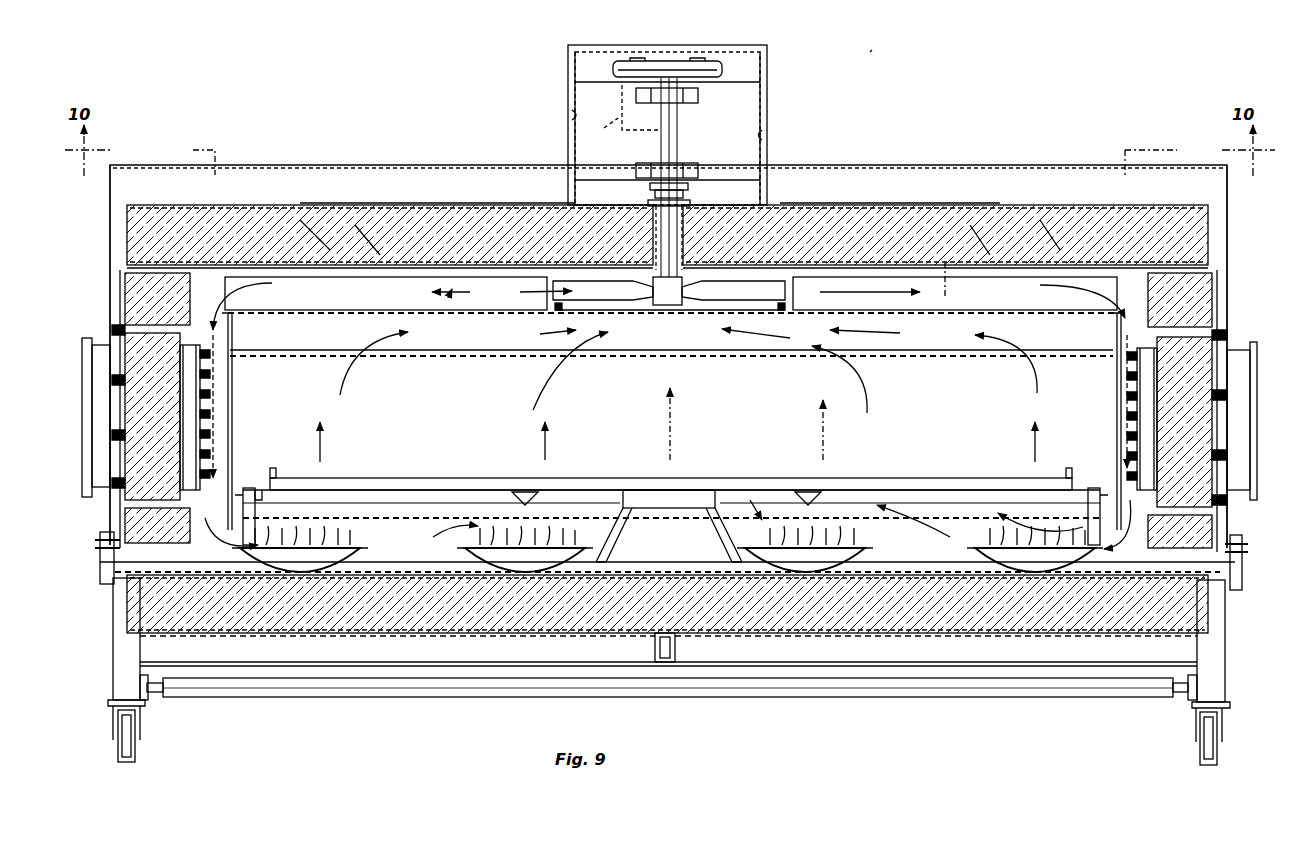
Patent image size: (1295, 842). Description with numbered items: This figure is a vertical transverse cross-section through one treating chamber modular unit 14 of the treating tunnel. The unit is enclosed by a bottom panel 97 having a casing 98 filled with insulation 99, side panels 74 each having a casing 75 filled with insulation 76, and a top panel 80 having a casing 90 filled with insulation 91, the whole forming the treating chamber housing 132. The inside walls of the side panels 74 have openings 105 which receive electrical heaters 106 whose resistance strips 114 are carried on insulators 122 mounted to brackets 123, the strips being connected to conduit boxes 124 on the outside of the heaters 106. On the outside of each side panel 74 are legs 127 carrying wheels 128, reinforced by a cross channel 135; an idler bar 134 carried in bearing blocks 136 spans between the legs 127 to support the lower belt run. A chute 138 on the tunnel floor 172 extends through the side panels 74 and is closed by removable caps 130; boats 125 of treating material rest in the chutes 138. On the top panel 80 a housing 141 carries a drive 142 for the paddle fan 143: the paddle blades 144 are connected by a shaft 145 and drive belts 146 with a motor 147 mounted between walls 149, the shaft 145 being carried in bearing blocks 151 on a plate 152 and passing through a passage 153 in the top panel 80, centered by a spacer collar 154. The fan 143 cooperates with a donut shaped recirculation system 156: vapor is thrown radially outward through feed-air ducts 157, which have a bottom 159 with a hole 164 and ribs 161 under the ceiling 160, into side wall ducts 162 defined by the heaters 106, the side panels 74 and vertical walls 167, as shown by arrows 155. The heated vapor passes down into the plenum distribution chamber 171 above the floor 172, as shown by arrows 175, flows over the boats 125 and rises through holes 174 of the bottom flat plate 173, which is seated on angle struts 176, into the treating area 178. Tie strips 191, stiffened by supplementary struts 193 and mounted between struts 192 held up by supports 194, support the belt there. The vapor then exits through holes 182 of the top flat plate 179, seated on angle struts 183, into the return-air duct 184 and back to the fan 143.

The treating chamber modular unit 14 is at (872, 50).
The side panel 74 is at (78, 515).
The casing 75 is at (124, 505).
The insulation 76 is at (182, 535).
The top panel 80 is at (902, 204).
The casing 90 is at (465, 204).
The insulation 91 is at (446, 204).
The bottom panel 97 is at (510, 640).
The casing 98 is at (592, 640).
The insulation 99 is at (712, 630).
The opening 105 is at (125, 322).
The electrical heater 106 is at (158, 400).
The resistance strip 114 is at (212, 430).
The insulator 122 is at (208, 385).
The bracket 123 is at (208, 402).
The conduit box 124 is at (90, 375).
The boat 125 is at (667, 549).
The leg 127 is at (135, 657).
The wheel 128 is at (135, 752).
The removable cap 130 is at (100, 536).
The treating chamber housing 132 is at (312, 190).
The idler bar 134 is at (684, 698).
The cross channel 135 is at (667, 618).
The bearing block 136 is at (185, 672).
The chute 138 is at (110, 560).
The housing 141 is at (766, 120).
The drive 142 is at (752, 78).
The paddle fan 143 is at (565, 292).
The paddle blade 144 is at (669, 290).
The shaft 145 is at (680, 146).
The drive belt 146 is at (700, 62).
The motor 147 is at (622, 118).
The wall 149 is at (572, 113).
The bearing block 151 is at (700, 96).
The plate 152 is at (572, 79).
The passage 153 is at (690, 210).
The spacer collar 154 is at (650, 187).
The arrows 155 is at (425, 293).
The recirculation system 156 is at (735, 432).
The feed-air duct 157 is at (950, 312).
The bottom 159 is at (305, 316).
The ceiling 160 is at (362, 258).
The rib 161 is at (312, 260).
The side wall duct 162 is at (232, 335).
The hole 164 is at (640, 311).
The vertical wall 167 is at (1040, 427).
The plenum distribution chamber 171 is at (672, 542).
The floor 172 is at (665, 562).
The bottom flat plate 173 is at (376, 514).
The hole 174 is at (308, 514).
The arrows 175 is at (500, 470).
The angle strut 176 is at (264, 514).
The treating area 178 is at (596, 437).
The top flat plate 179 is at (495, 362).
The hole 182 is at (625, 362).
The angle strut 183 is at (232, 372).
The return-air duct 184 is at (712, 345).
The tie strip 191 is at (832, 486).
The strut 192 is at (277, 480).
The supplementary strut 193 is at (540, 500).
The support 194 is at (648, 540).